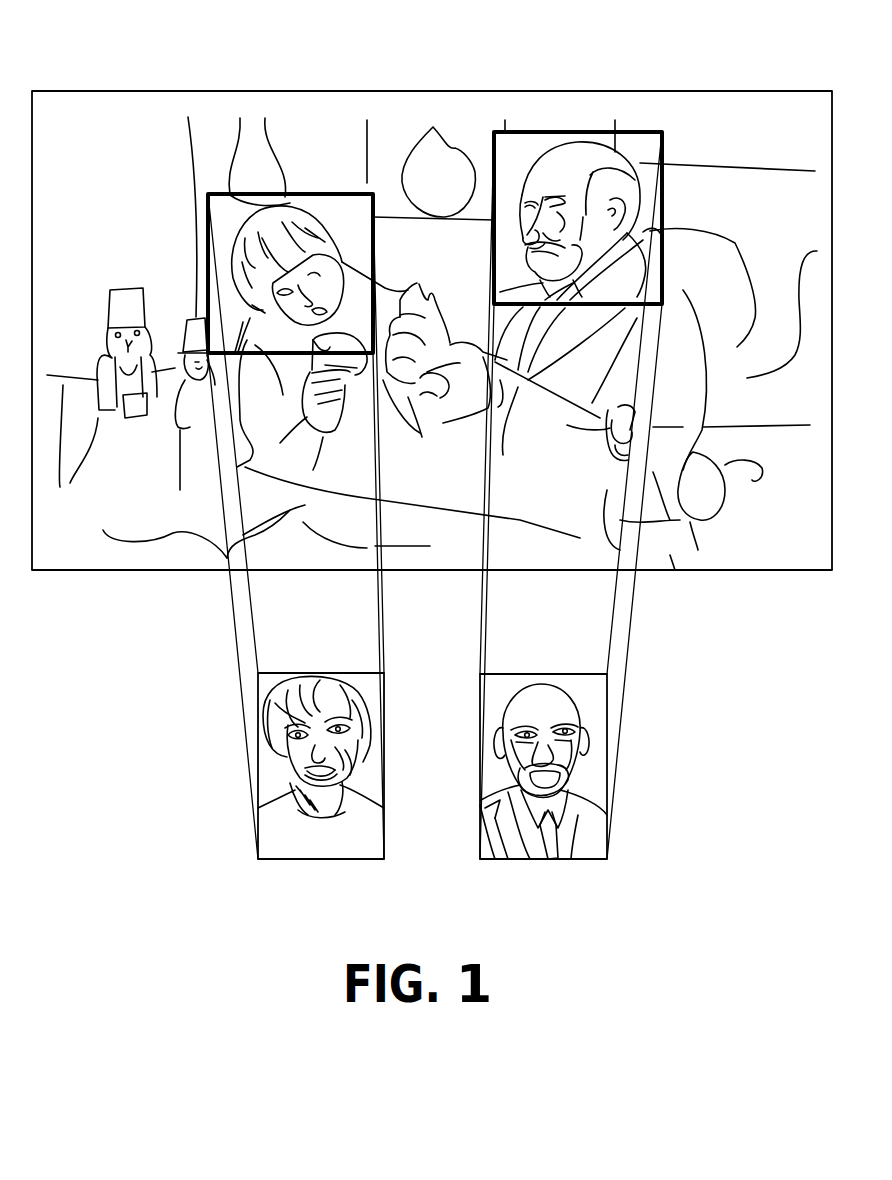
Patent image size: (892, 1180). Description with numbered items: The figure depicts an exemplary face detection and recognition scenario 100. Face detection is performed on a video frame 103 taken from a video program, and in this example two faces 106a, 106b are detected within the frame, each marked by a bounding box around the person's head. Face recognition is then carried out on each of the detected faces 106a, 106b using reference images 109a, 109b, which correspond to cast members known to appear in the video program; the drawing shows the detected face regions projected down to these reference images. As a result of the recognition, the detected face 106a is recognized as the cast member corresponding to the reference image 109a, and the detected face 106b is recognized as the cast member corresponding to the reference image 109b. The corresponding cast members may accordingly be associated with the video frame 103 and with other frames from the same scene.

The face detection and recognition scenario 100 is at (735, 857).
The video frame 103 is at (668, 555).
The face 106a is at (320, 194).
The face 106b is at (567, 132).
The reference image 109a is at (386, 758).
The reference image 109b is at (480, 826).